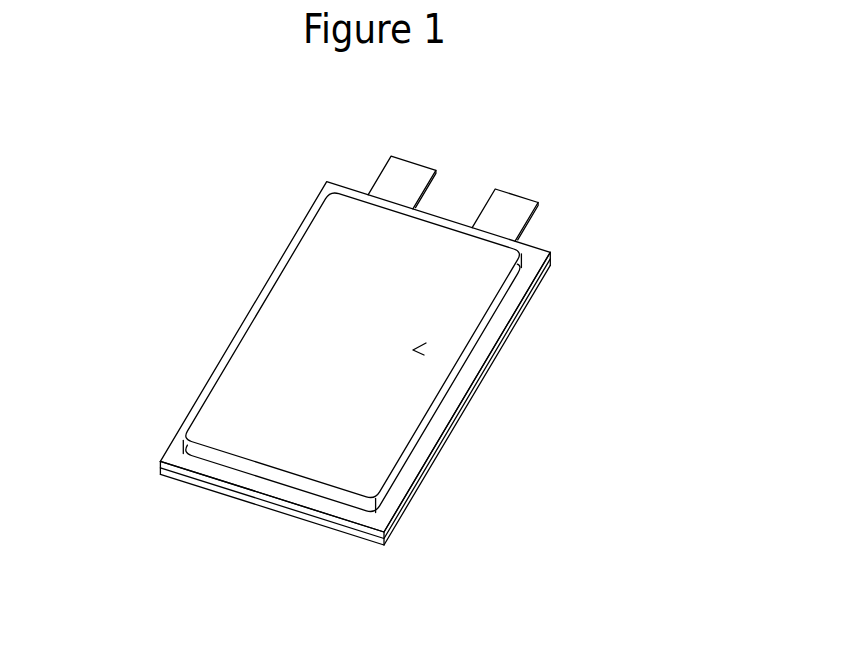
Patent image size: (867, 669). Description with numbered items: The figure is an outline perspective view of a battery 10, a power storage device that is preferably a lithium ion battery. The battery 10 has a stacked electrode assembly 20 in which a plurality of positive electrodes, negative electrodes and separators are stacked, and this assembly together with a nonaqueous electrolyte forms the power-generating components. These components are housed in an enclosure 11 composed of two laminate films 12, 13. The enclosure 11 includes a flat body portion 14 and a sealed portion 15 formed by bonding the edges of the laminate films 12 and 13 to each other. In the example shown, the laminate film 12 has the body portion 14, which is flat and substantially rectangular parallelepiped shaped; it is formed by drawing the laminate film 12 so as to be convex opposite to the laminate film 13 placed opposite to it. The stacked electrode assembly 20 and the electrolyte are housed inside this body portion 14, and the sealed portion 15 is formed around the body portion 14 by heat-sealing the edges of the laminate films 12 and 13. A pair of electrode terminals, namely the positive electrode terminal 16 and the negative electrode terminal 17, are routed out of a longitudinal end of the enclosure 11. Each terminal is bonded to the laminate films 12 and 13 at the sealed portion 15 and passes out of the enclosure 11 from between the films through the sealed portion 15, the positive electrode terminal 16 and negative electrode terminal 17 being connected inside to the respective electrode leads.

The battery 10 is at (615, 133).
The enclosure 11 is at (70, 408).
The laminate film 12 is at (186, 453).
The laminate film 13 is at (177, 479).
The body portion 14 is at (408, 394).
The sealed portion 15 is at (413, 469).
The positive electrode terminal 16 is at (410, 175).
The negative electrode terminal 17 is at (513, 207).
The stacked electrode assembly 20 is at (413, 350).